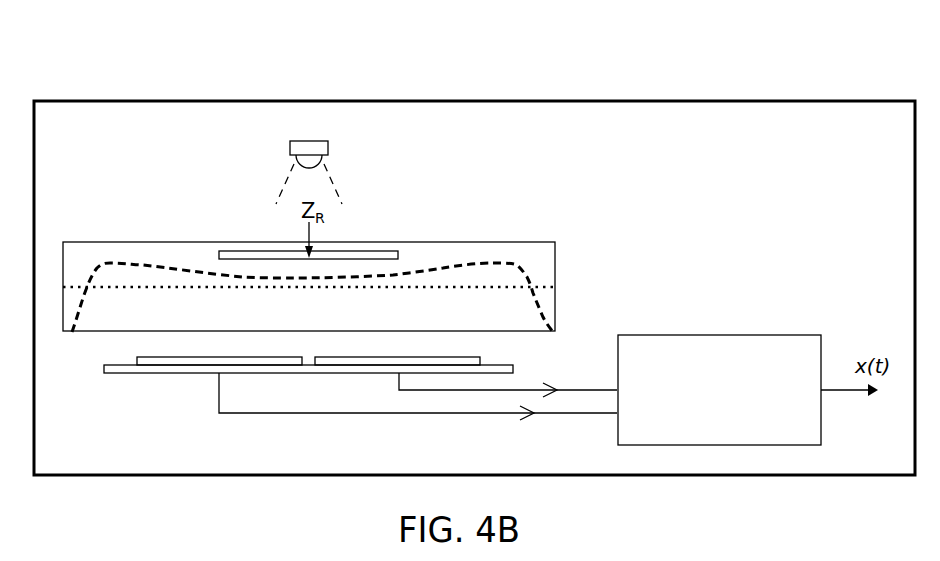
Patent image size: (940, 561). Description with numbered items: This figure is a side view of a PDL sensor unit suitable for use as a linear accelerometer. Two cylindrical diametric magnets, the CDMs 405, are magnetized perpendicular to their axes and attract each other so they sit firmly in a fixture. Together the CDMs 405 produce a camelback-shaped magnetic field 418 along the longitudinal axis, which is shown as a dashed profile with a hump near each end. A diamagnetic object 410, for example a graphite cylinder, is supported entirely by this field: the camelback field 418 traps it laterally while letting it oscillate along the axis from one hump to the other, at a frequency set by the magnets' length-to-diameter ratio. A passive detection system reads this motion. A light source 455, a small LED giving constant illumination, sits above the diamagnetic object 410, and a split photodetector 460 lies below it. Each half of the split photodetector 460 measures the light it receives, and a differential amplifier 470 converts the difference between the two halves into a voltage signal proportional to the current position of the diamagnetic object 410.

The cylindrical diametric magnet (CDM) 405 is at (537, 253).
The diamagnetic object 410 is at (302, 259).
The camelback-shaped magnetic field 418 is at (540, 313).
The light source 455 is at (313, 148).
The split photodetector 460 is at (177, 360).
The differential amplifier 470 is at (698, 405).